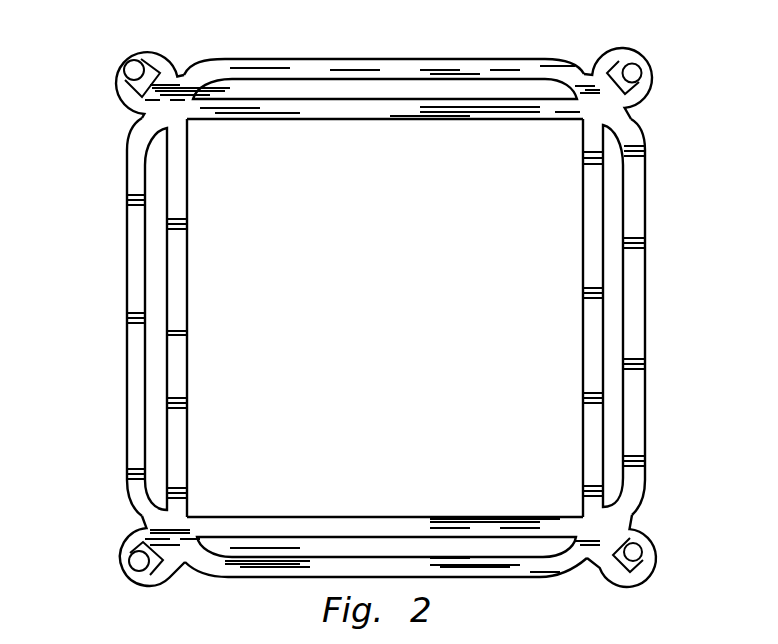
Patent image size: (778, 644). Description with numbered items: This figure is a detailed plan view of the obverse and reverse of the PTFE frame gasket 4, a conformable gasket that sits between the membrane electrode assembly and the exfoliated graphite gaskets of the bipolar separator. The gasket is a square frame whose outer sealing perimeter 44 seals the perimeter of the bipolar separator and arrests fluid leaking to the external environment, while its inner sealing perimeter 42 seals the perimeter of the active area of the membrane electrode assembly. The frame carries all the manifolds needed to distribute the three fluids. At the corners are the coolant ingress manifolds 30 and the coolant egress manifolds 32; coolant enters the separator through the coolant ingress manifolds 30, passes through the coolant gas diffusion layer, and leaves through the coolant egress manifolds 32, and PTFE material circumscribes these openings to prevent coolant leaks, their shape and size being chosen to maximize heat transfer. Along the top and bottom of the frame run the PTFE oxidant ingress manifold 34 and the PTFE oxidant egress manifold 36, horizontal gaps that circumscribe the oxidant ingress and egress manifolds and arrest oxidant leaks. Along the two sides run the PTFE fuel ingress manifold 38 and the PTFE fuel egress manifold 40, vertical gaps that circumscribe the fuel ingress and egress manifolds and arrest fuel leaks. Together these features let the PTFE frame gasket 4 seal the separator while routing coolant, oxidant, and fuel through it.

The PTFE frame gasket 4 is at (103, 442).
The coolant ingress manifold 30 is at (142, 84).
The coolant egress manifold 32 is at (135, 556).
The PTFE oxidant ingress manifold 34 is at (384, 80).
The PTFE oxidant egress manifold 36 is at (493, 557).
The PTFE fuel ingress manifold 38 is at (150, 380).
The PTFE fuel egress manifold 40 is at (625, 303).
The inner sealing perimeter 42 is at (593, 215).
The outer sealing perimeter 44 is at (137, 173).